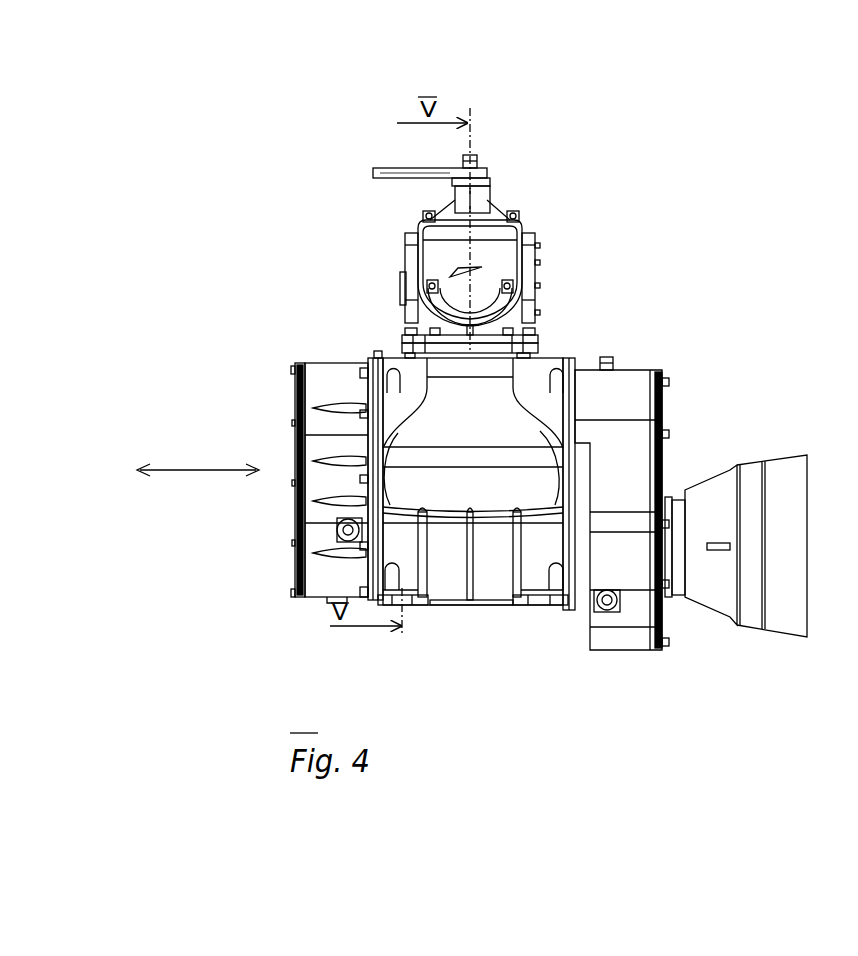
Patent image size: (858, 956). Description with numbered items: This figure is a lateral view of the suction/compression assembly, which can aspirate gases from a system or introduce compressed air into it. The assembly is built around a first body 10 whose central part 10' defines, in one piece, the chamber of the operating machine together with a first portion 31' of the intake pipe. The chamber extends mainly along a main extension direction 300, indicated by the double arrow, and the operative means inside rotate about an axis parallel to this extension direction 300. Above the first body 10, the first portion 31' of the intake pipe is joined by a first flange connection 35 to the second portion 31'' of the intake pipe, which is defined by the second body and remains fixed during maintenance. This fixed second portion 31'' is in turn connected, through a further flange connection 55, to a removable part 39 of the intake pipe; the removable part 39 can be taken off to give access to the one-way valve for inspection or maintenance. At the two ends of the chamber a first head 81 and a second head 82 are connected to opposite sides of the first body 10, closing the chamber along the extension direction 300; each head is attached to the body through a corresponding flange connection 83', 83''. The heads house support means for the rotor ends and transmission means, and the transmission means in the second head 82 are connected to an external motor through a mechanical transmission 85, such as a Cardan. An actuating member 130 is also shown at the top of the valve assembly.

The actuating lever 130 is at (392, 168).
The further flange connection 55 is at (518, 214).
The removable part 39 is at (498, 258).
The second portion of the intake pipe 31'' is at (528, 298).
The first flange connection 35 is at (550, 344).
The first body 10 is at (473, 542).
The central part 10' is at (471, 602).
The first portion of the intake pipe 31' is at (592, 402).
The flange connection 83' is at (356, 423).
The first head 81 is at (298, 362).
The flange connection 83'' is at (602, 537).
The second head 82 is at (666, 368).
The mechanical transmission 85 is at (745, 635).
The main extension direction 300 is at (189, 468).